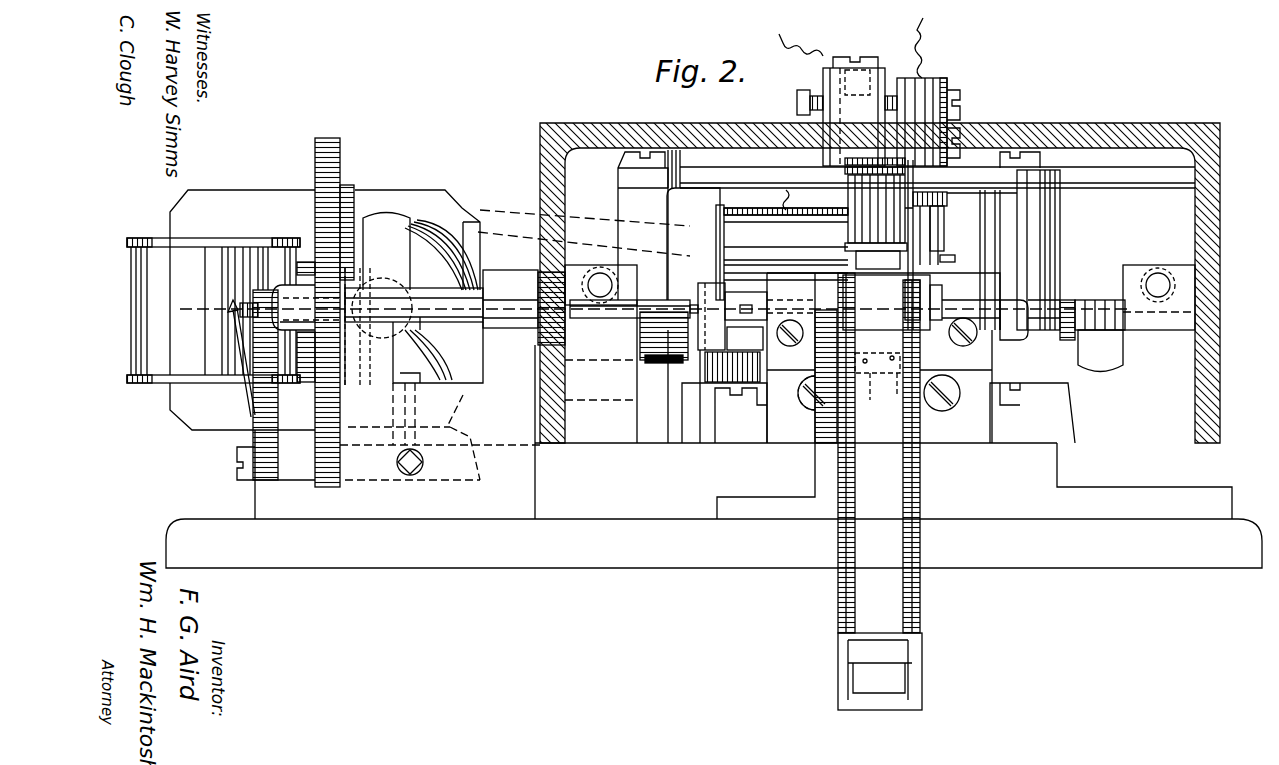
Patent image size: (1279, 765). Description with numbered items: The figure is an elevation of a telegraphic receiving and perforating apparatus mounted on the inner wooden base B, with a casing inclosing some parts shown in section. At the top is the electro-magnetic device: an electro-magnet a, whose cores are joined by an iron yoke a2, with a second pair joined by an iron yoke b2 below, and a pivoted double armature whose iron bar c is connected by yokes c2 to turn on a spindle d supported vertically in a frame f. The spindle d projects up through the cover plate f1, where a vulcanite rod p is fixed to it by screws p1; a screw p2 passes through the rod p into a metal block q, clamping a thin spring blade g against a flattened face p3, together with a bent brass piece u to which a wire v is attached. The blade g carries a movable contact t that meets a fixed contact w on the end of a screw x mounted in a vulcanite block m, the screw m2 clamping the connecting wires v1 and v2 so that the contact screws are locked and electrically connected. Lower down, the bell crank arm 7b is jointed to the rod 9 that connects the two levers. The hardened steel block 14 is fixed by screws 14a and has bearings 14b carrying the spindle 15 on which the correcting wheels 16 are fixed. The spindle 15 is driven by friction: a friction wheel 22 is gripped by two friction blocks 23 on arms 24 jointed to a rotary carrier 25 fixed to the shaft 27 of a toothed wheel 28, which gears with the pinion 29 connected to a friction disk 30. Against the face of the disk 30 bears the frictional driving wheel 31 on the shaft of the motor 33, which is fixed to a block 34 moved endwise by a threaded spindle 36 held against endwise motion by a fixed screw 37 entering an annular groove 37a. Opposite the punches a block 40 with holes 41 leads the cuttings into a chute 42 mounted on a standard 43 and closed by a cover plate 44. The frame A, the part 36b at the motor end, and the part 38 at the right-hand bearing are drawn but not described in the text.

The frame A is at (497, 213).
The wooden base B is at (621, 526).
The electro-magnet a is at (931, 240).
The iron yoke a2 is at (669, 226).
The iron yoke b2 is at (672, 390).
The armature bar c is at (928, 210).
The yoke c2 is at (950, 247).
The armature spindle d is at (926, 224).
The magnet frame f is at (1030, 241).
The cover plate f1 is at (709, 183).
The contact lever g is at (909, 124).
The vulcanite block m is at (854, 111).
The clamping screw m2 is at (900, 55).
The vulcanite rod p is at (922, 139).
The fixing screws p1 is at (960, 140).
The clamping screw p2 is at (960, 95).
The flattened face p3 is at (922, 116).
The metal block q is at (905, 75).
The movable contact t is at (958, 108).
The bent brass piece u is at (950, 76).
The wire v is at (923, 39).
The connecting wire v1 is at (804, 33).
The connecting wire v2 is at (782, 71).
The fixed contact w is at (885, 103).
The contact screw x is at (797, 105).
The bell crank lever arm 7b is at (1085, 288).
The connecting rod 9 is at (877, 325).
The hardened steel block 14 is at (876, 401).
The fixing screws 14a is at (742, 408).
The bearings 14b is at (877, 343).
The feed wheel spindle 15 is at (770, 306).
The correcting wheels 16 is at (835, 292).
The friction wheel 22 is at (700, 272).
The friction blocks 23 is at (724, 290).
The arms 24 is at (614, 320).
The rotary carrier 25 is at (535, 338).
The shaft 27 is at (414, 309).
The toothed wheel 28 is at (313, 460).
The pinion 29 is at (303, 370).
The friction disk 30 is at (352, 188).
The frictional driving wheel 31 is at (226, 330).
The motor 33 is at (417, 240).
The sliding block 34 is at (425, 459).
The threaded spindle 36 is at (396, 463).
The drum 36b is at (213, 310).
The fixed screw 37 is at (413, 420).
The annular groove 37a is at (404, 494).
The worm gear 38 is at (1085, 386).
The block 40 is at (877, 384).
The holes 41 is at (887, 386).
The chute 42 is at (922, 480).
The standard 43 is at (762, 499).
The cover plate 44 is at (880, 491).